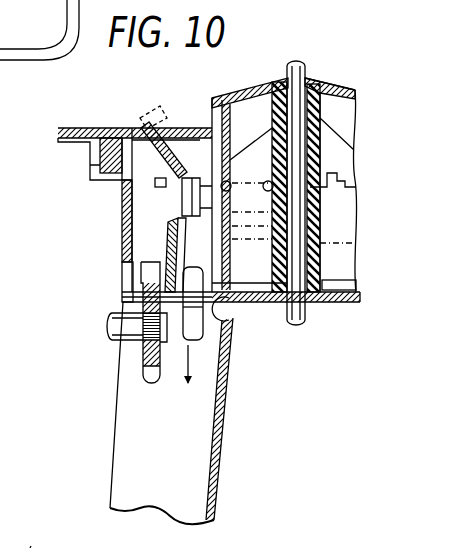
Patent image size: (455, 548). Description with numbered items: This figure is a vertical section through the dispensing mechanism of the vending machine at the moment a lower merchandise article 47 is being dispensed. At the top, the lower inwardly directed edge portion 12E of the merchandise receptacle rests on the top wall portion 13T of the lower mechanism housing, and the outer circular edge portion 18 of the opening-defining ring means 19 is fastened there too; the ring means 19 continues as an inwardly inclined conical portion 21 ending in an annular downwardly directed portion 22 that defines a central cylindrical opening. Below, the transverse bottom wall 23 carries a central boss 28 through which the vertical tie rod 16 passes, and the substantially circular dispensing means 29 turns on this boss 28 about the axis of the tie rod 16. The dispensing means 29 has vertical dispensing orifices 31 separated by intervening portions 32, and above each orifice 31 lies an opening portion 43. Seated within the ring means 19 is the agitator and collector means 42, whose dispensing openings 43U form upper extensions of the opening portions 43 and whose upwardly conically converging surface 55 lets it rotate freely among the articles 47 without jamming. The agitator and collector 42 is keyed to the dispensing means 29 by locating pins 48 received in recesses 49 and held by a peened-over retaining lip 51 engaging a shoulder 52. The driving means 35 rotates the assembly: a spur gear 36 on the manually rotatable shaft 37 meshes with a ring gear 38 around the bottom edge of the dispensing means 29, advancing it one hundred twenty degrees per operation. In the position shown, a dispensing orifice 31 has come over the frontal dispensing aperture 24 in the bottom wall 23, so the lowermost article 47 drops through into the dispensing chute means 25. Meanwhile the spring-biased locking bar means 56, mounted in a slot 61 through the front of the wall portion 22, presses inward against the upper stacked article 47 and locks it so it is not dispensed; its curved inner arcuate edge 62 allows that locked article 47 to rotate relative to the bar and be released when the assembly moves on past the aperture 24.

The lower inwardly directed edge portion 12E is at (113, 128).
The top wall portion 13T is at (58, 128).
The vertical tie rod 16 is at (300, 62).
The outer circular edge portion 18 is at (100, 155).
The opening-defining ring means 19 is at (150, 135).
The conical portion 21 is at (168, 142).
The annular downwardly directed portion 22 is at (182, 206).
The transverse bottom wall 23 is at (350, 303).
The dispensing aperture 24 is at (232, 318).
The dispensing chute means 25 is at (203, 468).
The boss 28 is at (338, 266).
The dispensing means 29 is at (326, 212).
The dispensing orifice 31 is at (203, 257).
The intervening portion 32 is at (30, 547).
The driving means 35 is at (140, 276).
The spur gear 36 is at (147, 355).
The manually rotatable shaft 37 is at (112, 333).
The ring gear 38 is at (150, 278).
The agitator and collector means 42 is at (352, 86).
The opening portion 43 is at (172, 192).
The dispensing opening 43U is at (183, 157).
The merchandise article 47 is at (200, 140).
The locating pin 48 is at (232, 165).
The recess 49 is at (228, 182).
The retaining lip 51 is at (330, 184).
The shoulder 52 is at (252, 211).
The conically converging surface 55 is at (260, 79).
The locking bar means 56 is at (160, 180).
The slot 61 is at (150, 174).
The curved inner arcuate edge 62 is at (185, 255).